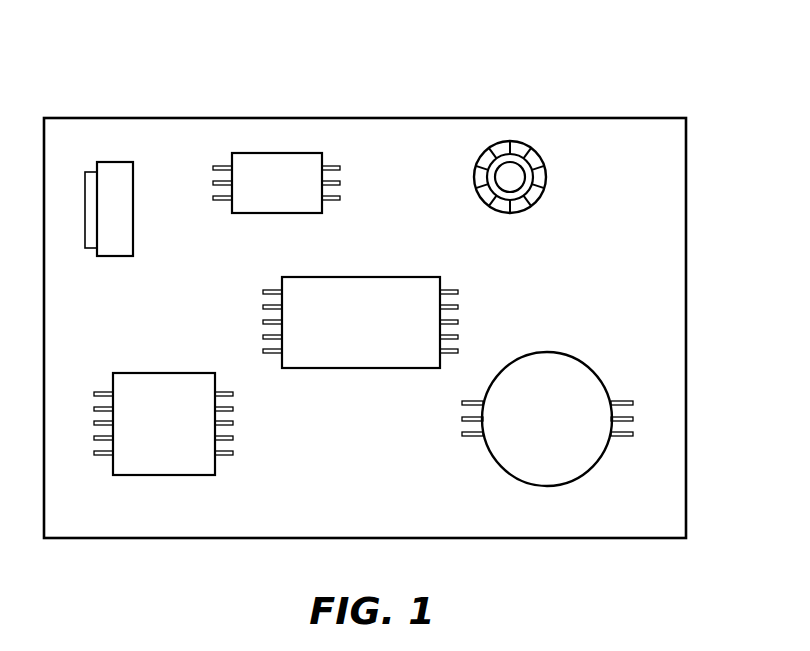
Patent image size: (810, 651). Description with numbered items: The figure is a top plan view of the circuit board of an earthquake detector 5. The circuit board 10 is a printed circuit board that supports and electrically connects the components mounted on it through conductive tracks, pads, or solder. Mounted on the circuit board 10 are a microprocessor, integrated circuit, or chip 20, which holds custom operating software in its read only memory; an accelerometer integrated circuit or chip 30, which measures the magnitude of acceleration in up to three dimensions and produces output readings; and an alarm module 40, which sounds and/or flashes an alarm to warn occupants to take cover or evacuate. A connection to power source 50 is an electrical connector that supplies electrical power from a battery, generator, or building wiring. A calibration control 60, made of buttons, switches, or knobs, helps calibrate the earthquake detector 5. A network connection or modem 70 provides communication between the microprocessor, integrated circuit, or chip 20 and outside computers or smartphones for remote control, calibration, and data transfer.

The earthquake detector 5 is at (166, 61).
The circuit board 10 is at (687, 222).
The microprocessor, integrated circuit, or chip 20 is at (373, 335).
The accelerometer integrated circuit or chip 30 is at (176, 437).
The alarm module 40 is at (533, 433).
The connection to power source 50 is at (103, 219).
The calibration control 60 is at (510, 177).
The network connection or modem 70 is at (290, 196).